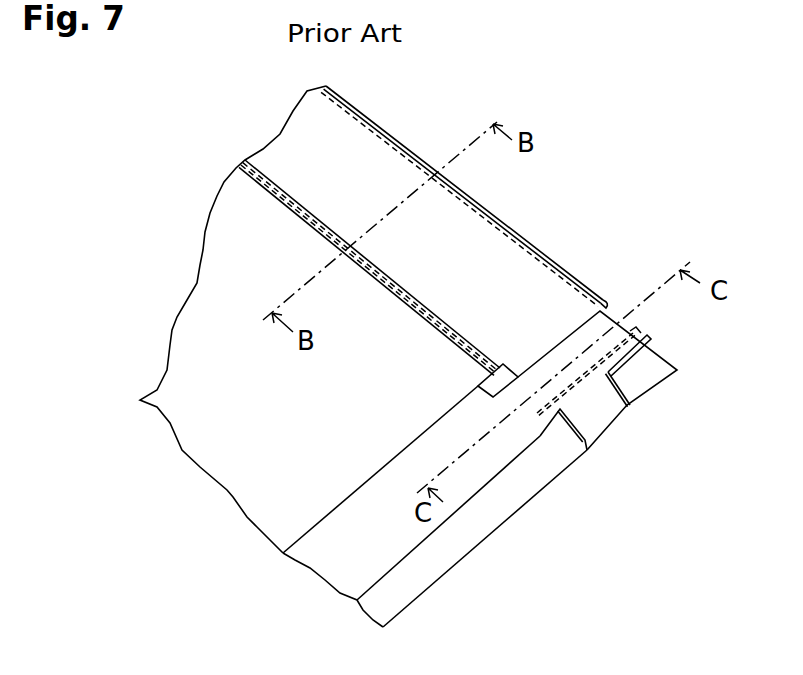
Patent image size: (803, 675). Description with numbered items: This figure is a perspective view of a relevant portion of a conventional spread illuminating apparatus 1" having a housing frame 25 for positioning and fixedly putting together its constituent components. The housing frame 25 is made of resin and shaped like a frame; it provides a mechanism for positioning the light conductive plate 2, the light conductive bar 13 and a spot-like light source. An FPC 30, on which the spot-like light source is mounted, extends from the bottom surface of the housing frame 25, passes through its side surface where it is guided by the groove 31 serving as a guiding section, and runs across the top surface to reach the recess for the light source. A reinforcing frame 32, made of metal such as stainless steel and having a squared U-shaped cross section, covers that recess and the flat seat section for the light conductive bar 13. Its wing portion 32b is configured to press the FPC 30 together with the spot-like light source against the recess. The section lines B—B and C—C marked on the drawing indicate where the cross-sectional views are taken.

The spread illuminating apparatus 1 is at (628, 97).
The light conductive plate 2 is at (202, 392).
The light conductive bar 13 is at (517, 267).
The housing frame 25 is at (405, 588).
The FPC 30 is at (600, 408).
The groove 31 is at (631, 409).
The reinforcing frame 32 is at (408, 305).
The wing portion 32b is at (632, 327).